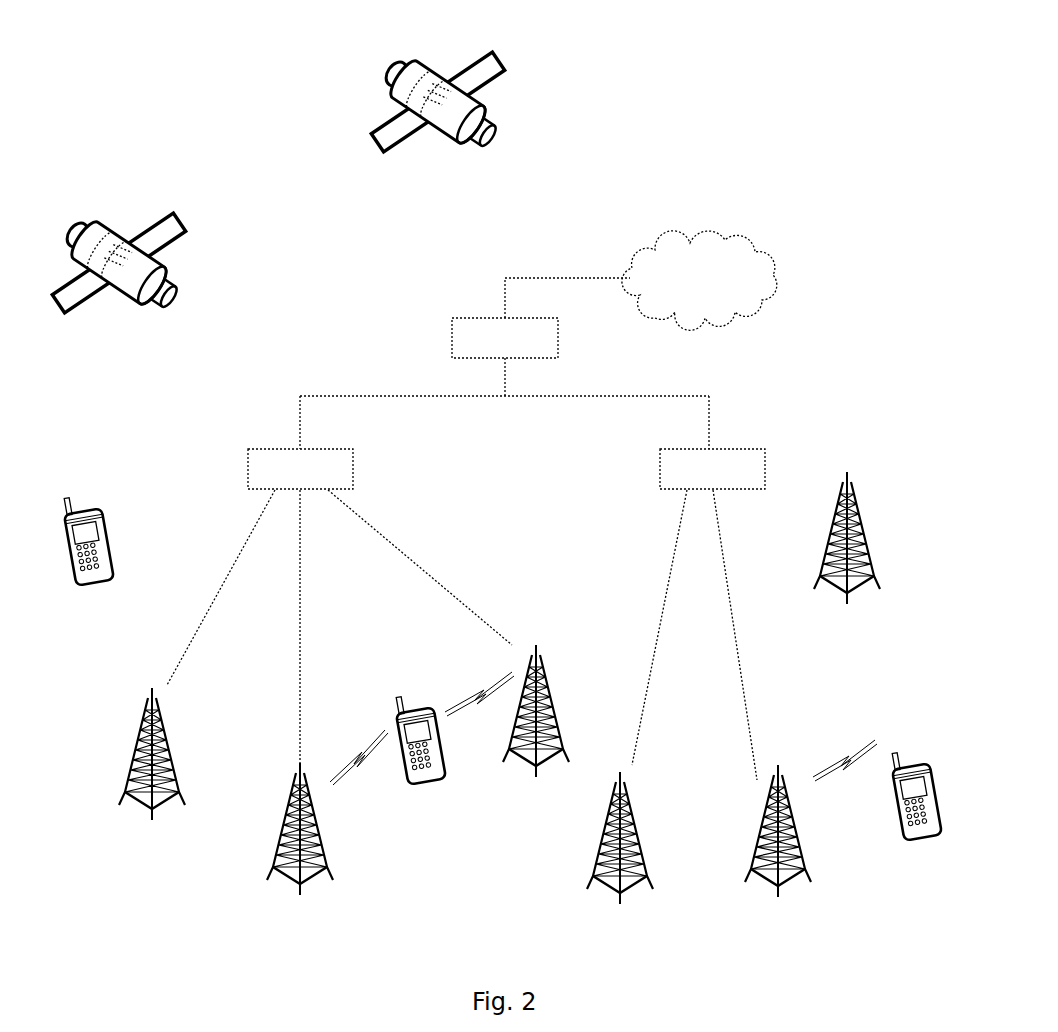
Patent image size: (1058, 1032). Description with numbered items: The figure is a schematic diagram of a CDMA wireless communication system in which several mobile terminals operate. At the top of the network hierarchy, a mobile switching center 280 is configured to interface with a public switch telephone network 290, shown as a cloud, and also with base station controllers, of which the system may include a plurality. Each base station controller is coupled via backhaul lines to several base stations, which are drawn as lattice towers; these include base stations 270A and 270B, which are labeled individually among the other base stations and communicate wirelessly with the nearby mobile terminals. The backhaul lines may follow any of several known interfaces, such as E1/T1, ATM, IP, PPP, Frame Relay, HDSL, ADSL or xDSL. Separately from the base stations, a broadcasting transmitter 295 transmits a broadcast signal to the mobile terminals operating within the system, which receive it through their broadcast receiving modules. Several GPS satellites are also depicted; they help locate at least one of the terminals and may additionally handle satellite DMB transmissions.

The base station 270A is at (316, 882).
The base station 270B is at (550, 712).
The mobile switching center 280 is at (460, 317).
The public switch telephone network 290 is at (772, 281).
The broadcasting transmitter 295 is at (858, 536).